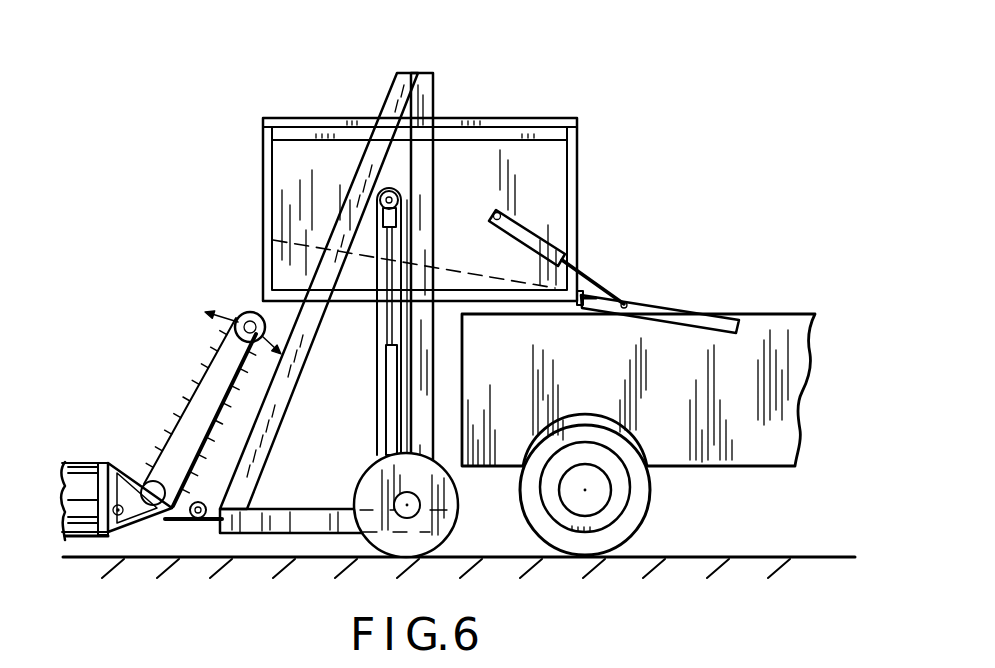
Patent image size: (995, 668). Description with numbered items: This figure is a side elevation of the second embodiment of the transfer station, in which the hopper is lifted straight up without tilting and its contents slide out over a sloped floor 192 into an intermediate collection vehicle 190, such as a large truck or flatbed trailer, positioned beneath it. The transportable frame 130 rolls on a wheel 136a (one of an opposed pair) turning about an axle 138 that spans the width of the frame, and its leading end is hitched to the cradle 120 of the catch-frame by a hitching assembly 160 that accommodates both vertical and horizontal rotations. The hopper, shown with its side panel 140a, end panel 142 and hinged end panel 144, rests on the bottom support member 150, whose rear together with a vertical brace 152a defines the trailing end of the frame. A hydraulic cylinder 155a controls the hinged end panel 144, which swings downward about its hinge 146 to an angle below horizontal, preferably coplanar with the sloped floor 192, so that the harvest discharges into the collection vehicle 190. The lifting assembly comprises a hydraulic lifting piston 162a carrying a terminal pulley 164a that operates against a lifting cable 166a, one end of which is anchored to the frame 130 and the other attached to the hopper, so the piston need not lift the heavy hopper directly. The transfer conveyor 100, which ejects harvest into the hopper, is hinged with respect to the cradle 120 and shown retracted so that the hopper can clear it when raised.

The transfer conveyor 100 is at (205, 373).
The cradle 120 is at (90, 463).
The transportable frame 130 is at (376, 90).
The wheel 136a is at (447, 531).
The axle 138 is at (420, 503).
The side panel 140a is at (552, 184).
The end panel 142 is at (263, 200).
The end panel 144 is at (653, 298).
The hinge 146 is at (576, 305).
The bottom support member 150 is at (296, 518).
The vertical brace 152a is at (418, 206).
The hydraulic cylinder 155a is at (538, 234).
The hitching assembly 160 is at (198, 515).
The hydraulic lifting piston 162a is at (394, 424).
The terminal pulley 164a is at (378, 198).
The lifting cable 166a is at (377, 383).
The intermediate collection vehicle 190 is at (757, 334).
The sloped floor 192 is at (498, 246).